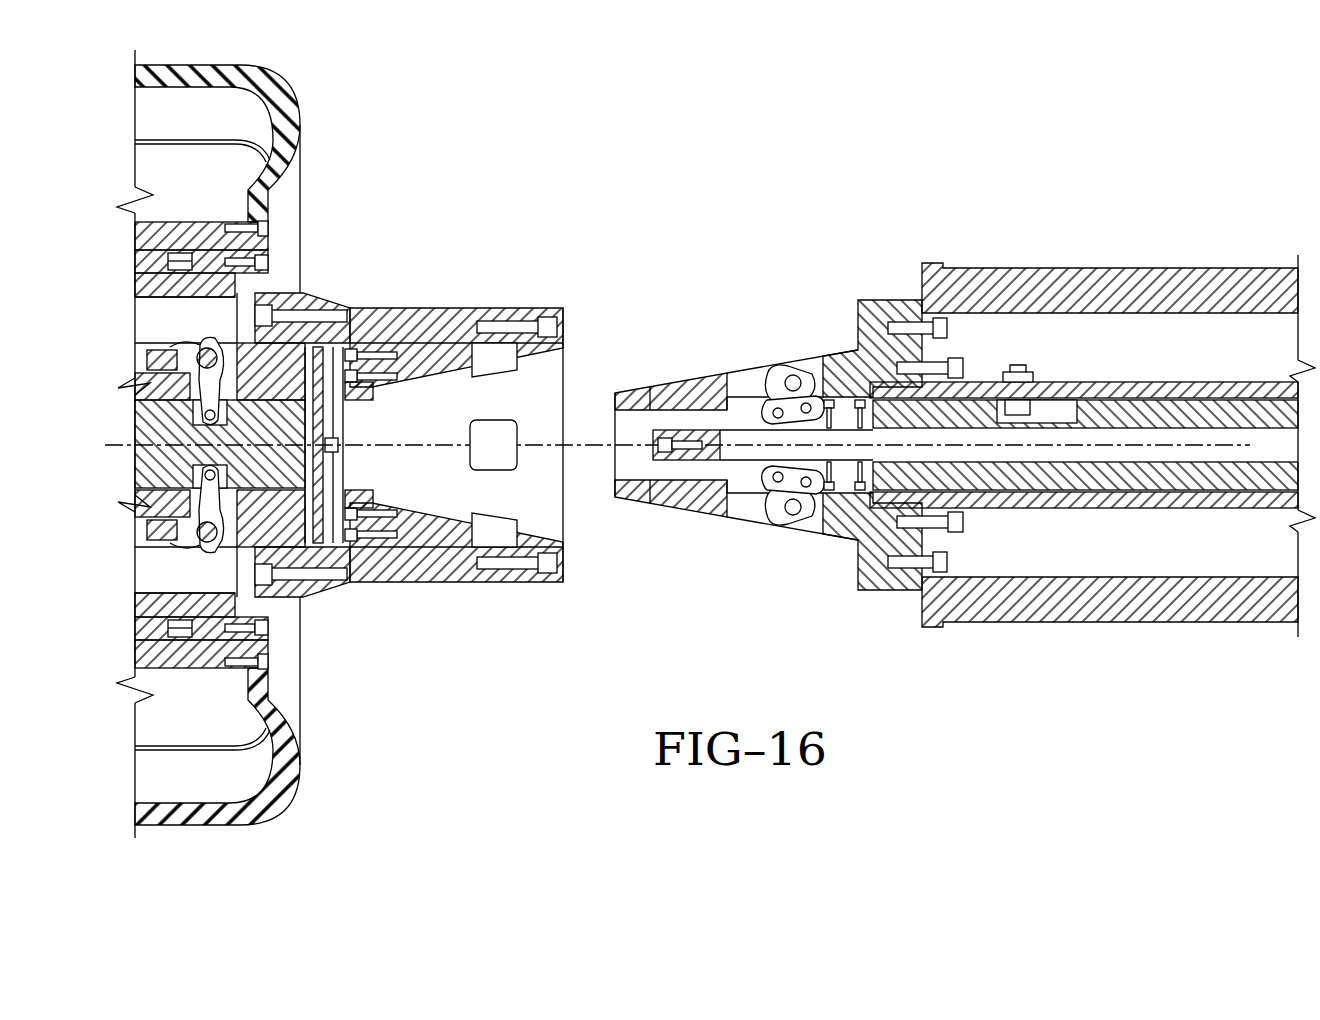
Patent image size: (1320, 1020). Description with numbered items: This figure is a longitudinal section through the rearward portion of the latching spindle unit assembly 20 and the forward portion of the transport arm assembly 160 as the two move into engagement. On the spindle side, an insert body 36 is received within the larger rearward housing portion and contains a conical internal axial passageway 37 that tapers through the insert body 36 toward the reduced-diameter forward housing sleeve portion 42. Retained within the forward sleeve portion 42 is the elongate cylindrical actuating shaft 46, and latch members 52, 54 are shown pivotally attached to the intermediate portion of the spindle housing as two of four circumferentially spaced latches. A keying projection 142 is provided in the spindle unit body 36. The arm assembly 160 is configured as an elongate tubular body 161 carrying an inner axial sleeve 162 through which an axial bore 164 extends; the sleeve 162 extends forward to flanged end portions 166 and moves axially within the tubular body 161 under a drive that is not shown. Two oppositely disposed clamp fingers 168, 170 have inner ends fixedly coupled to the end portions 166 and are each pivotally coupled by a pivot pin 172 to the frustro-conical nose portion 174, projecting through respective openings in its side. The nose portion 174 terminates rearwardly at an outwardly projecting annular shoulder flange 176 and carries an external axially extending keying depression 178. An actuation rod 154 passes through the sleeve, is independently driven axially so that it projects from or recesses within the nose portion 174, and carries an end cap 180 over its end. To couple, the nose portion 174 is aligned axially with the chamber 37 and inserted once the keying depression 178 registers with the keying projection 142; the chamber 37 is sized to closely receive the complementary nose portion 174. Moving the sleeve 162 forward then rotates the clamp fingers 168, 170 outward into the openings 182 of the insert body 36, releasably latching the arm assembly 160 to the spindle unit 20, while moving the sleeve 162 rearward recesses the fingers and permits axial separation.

The spindle unit assembly 20 is at (353, 150).
The insert body 36 is at (422, 532).
The conical internal axial passageway 37 is at (532, 388).
The forward housing sleeve portion 42 is at (270, 518).
The actuating shaft 46 is at (160, 413).
The latch member 52 is at (192, 342).
The latch member 54 is at (192, 548).
The keying projection 142 is at (370, 398).
The actuation rod 154 is at (730, 455).
The transport arm assembly 160 is at (1066, 628).
The elongate tubular body 161 is at (1193, 297).
The inner axial sleeve 162 is at (1123, 500).
The axial bore 164 is at (1183, 455).
The flanged end portions 166 is at (780, 406).
The clamp finger 168 is at (774, 512).
The clamp finger 170 is at (772, 375).
The pivot pin 172 is at (795, 383).
The frustro-conical nose portion 174 is at (638, 494).
The annular shoulder flange 176 is at (887, 300).
The keying depression 178 is at (640, 393).
The end cap 180 is at (663, 440).
The openings 182 is at (495, 352).